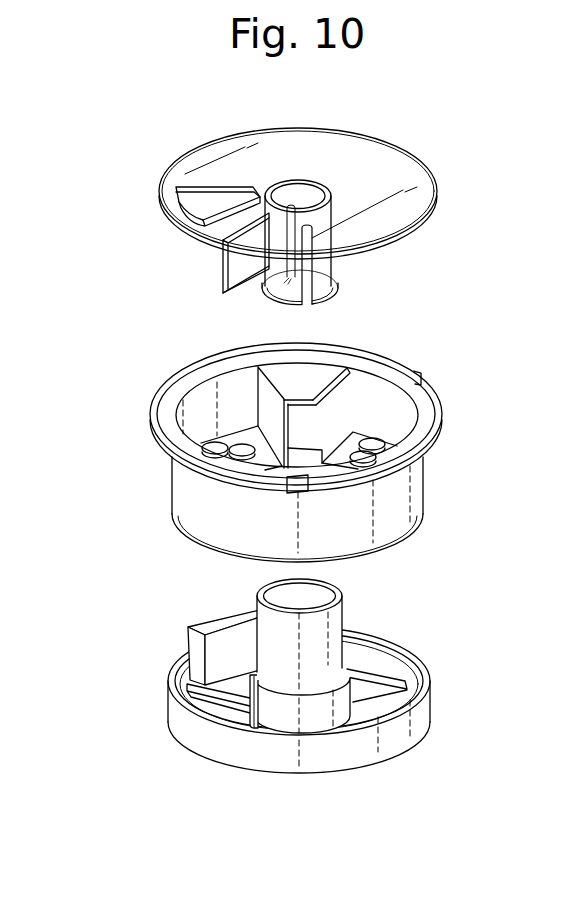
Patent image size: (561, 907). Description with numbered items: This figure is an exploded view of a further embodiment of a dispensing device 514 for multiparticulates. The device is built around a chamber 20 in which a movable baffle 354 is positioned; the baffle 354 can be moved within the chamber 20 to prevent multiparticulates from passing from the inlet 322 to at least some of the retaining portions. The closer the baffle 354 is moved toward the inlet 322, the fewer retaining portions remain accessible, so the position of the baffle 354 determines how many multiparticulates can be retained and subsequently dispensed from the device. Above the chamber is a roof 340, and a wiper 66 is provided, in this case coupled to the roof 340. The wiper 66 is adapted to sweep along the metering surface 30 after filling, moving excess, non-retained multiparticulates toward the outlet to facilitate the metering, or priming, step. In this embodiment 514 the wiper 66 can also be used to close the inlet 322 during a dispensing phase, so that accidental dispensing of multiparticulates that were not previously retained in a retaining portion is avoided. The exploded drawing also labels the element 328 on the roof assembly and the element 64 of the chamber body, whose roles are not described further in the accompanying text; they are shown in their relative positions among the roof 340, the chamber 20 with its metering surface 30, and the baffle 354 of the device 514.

The roof 340 is at (390, 170).
The wedge key 328 is at (198, 198).
The wiper 66 is at (233, 271).
The housing cup 64 is at (305, 373).
The inlet 322 is at (333, 407).
The metering surface 30 is at (237, 437).
The chamber 20 is at (303, 457).
The dispensing device 514 is at (245, 428).
The movable baffle 354 is at (218, 648).